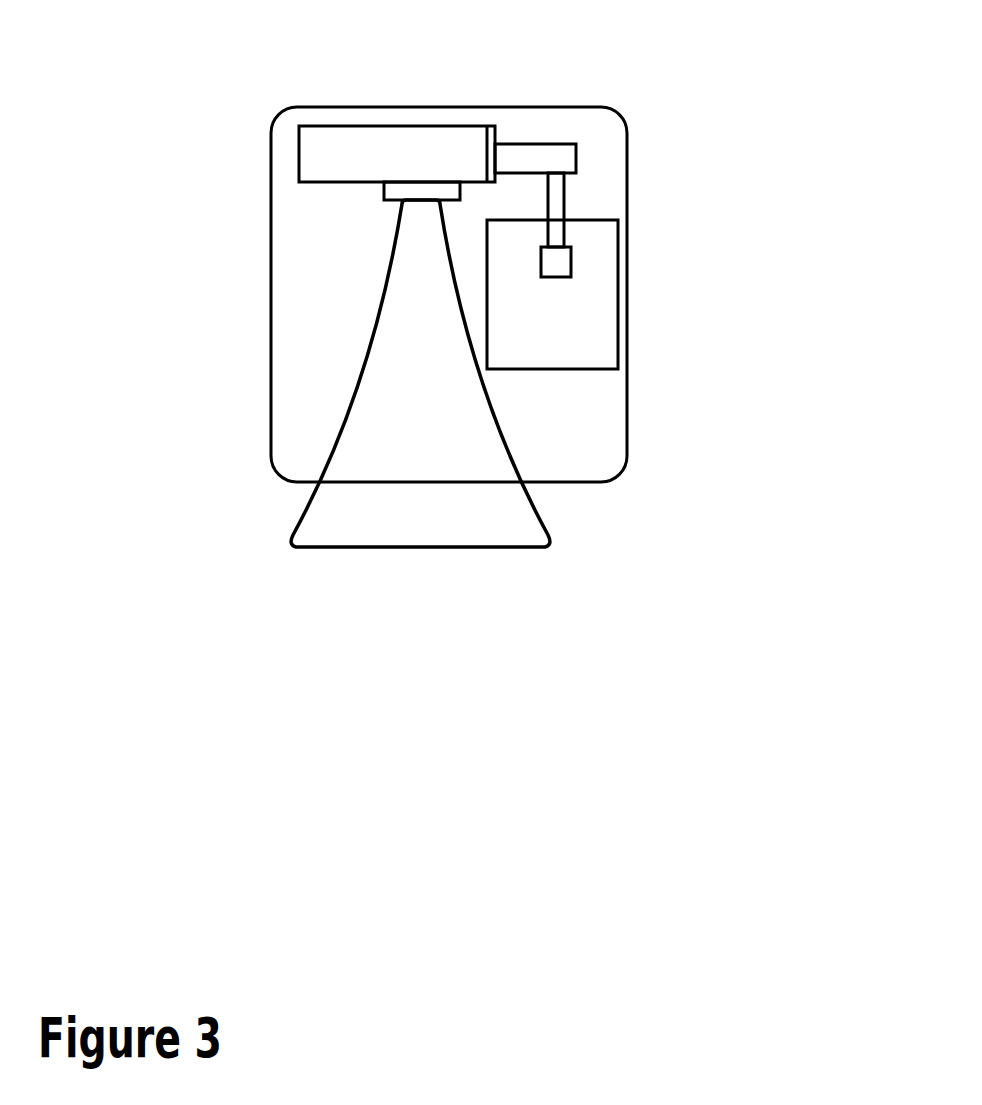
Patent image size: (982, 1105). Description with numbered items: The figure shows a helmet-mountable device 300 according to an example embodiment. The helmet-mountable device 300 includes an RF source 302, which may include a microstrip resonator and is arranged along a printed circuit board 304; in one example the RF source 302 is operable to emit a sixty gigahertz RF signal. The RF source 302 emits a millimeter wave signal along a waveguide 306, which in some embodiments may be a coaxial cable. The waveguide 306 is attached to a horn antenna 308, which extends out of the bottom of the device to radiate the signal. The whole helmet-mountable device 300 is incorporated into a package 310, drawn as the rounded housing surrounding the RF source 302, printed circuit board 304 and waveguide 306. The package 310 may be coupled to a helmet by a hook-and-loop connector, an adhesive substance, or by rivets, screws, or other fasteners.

The helmet-mountable device 300 is at (497, 310).
The RF source 302 is at (559, 277).
The printed circuit board 304 is at (546, 369).
The waveguide 306 is at (533, 144).
The horn antenna 308 is at (533, 547).
The package 310 is at (596, 482).